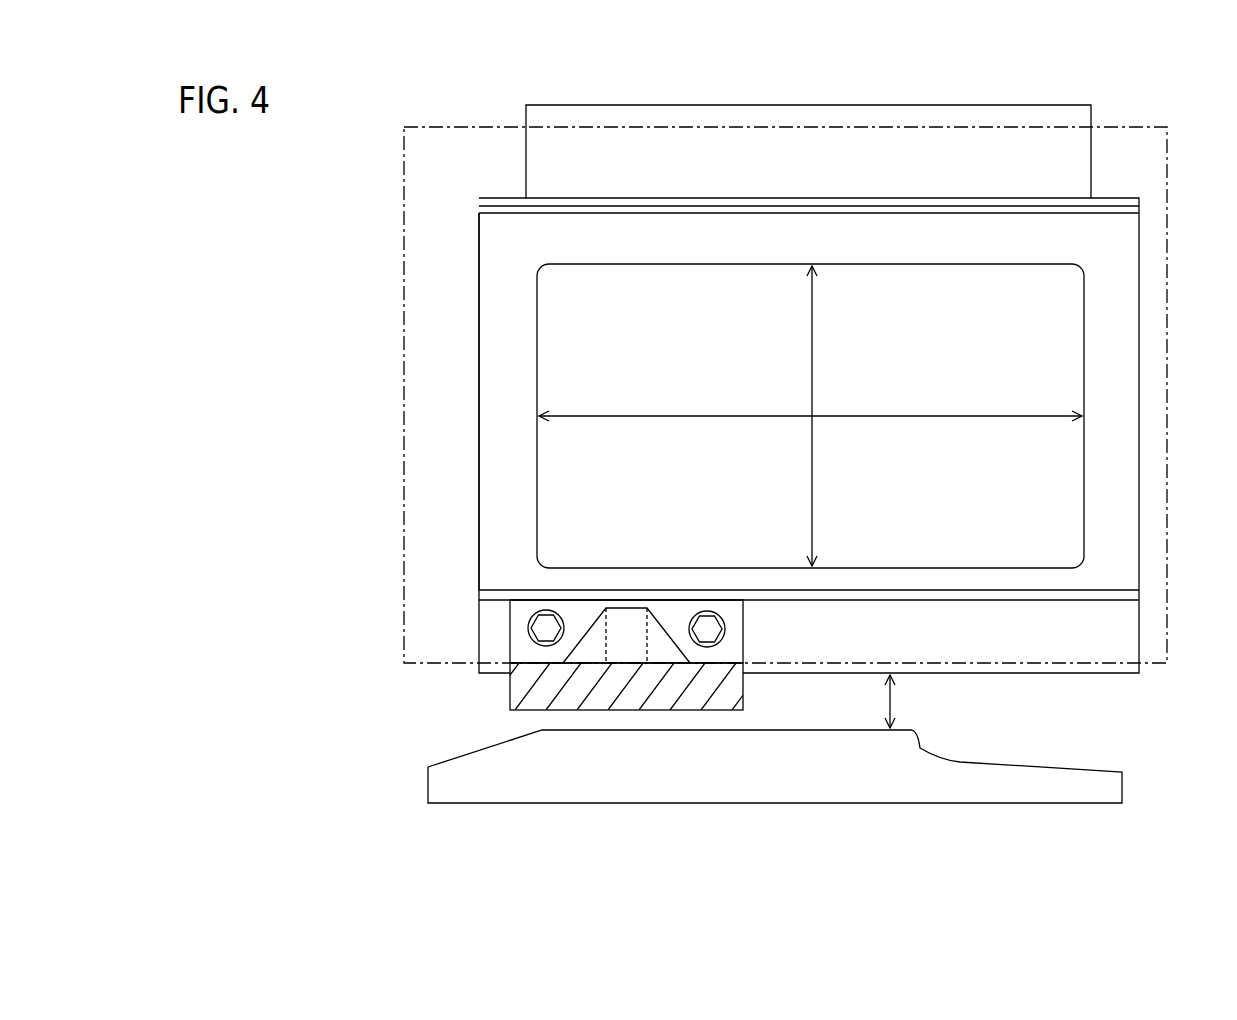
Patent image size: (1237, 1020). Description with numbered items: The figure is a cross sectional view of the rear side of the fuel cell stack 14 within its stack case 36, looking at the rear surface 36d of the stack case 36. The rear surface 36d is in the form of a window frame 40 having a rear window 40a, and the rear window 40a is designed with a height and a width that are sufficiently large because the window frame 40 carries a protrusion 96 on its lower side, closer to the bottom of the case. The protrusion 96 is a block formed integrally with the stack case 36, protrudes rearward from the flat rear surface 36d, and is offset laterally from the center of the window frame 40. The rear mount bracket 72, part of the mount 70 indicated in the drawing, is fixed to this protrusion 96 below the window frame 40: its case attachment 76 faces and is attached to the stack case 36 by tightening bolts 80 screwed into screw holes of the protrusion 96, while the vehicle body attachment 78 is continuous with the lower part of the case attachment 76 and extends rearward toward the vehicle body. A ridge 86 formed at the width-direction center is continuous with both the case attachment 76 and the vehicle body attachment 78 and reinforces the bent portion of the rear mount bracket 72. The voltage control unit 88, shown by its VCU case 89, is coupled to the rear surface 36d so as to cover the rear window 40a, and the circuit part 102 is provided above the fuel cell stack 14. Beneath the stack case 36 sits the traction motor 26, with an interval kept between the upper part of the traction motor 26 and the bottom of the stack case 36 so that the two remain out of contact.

The fuel cell stack 14 is at (440, 324).
The traction motor 26 is at (458, 757).
The stack case 36 is at (463, 280).
The rear surface 36d is at (497, 395).
The window frame 40 is at (1115, 352).
The rear window 40a is at (873, 264).
The mount 70 is at (674, 686).
The rear mount bracket 72 is at (748, 692).
The case attachment 76 is at (510, 630).
The vehicle body attachment 78 is at (510, 690).
The tightening bolts 80 is at (545, 625).
The ridge 86 is at (623, 622).
The voltage control unit 88 is at (785, 395).
The VCU case 89 is at (402, 177).
The protrusion 96 is at (733, 635).
The circuit part 102 is at (775, 105).